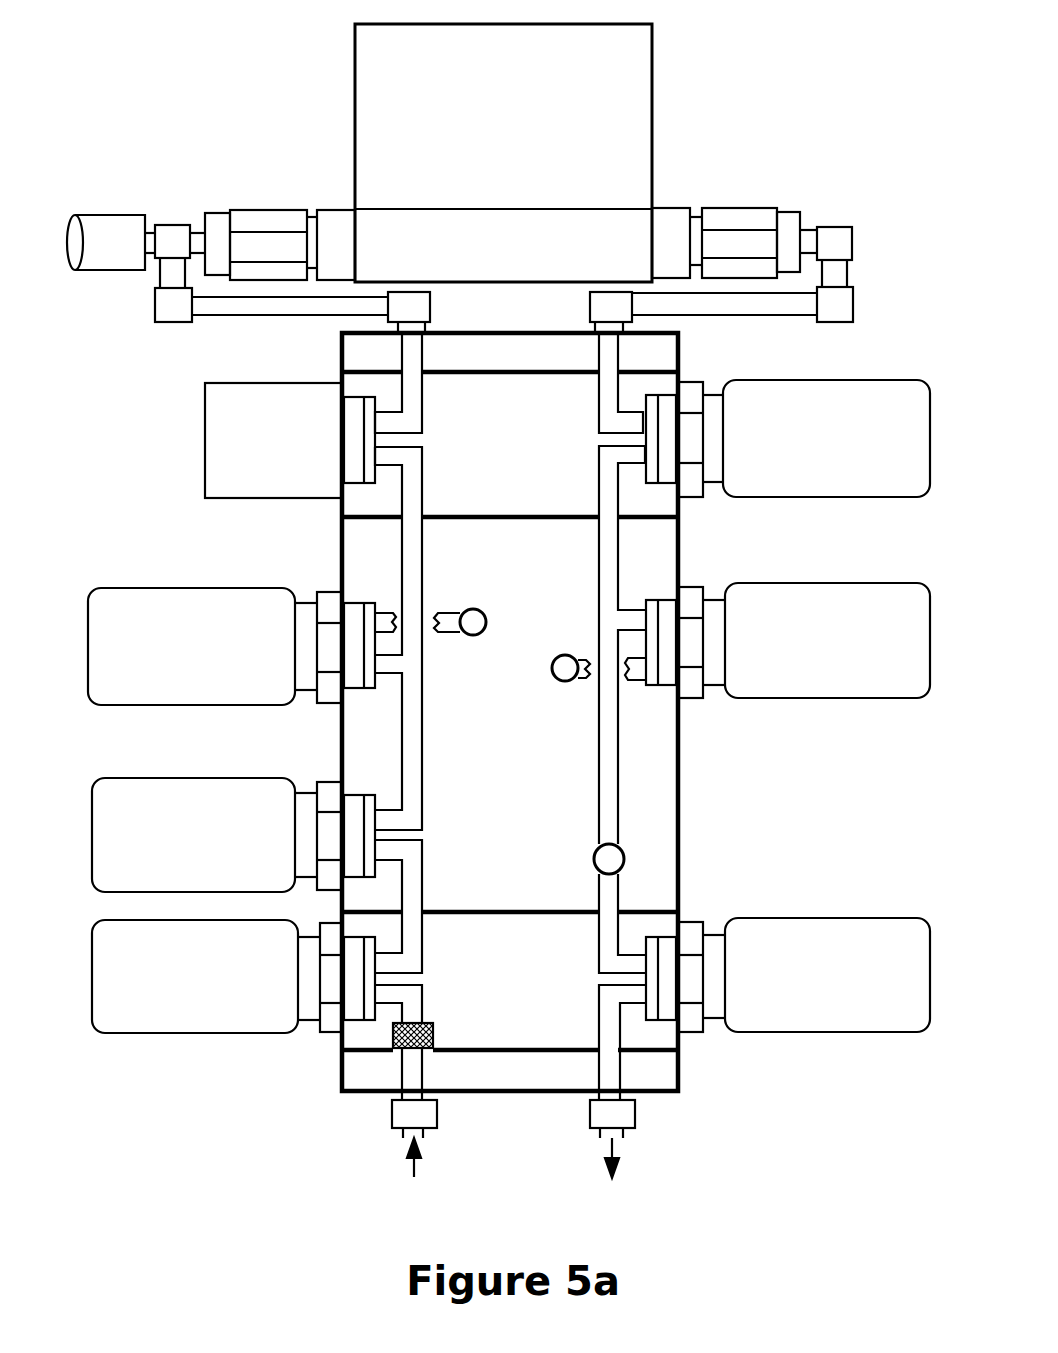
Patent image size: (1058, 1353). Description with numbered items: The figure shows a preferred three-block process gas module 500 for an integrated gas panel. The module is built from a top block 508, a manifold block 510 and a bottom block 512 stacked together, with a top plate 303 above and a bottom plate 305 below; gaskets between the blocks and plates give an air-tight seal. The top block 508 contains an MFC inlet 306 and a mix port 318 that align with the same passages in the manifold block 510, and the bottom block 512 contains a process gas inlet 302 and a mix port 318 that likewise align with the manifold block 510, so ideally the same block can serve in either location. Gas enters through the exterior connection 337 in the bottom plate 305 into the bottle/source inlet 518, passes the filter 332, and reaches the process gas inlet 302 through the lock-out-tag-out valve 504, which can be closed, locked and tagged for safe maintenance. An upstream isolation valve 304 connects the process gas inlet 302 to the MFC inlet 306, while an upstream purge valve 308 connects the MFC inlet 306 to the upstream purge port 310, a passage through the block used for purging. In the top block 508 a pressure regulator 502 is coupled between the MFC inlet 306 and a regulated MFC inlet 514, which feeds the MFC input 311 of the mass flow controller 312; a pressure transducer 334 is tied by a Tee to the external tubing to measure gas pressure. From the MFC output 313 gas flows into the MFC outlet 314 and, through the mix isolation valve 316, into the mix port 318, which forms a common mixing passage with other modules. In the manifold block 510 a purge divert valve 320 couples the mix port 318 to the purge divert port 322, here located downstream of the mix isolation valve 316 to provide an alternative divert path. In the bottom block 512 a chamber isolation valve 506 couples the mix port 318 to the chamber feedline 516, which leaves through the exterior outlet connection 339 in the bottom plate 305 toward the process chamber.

The process gas module 500 is at (209, 47).
The mass flow controller 312 is at (503, 153).
The MFC input 311 is at (324, 243).
The MFC output 313 is at (688, 240).
The pressure transducer 334 is at (115, 232).
The upper plate 303 is at (360, 348).
The lower plate 305 is at (355, 1065).
The top block 508 is at (355, 500).
The manifold block 510 is at (660, 810).
The bottom block 512 is at (353, 1032).
The regulated MFC inlet 514 is at (412, 405).
The MFC inlet 306 is at (413, 473).
The process gas inlet 302 is at (418, 865).
The bottle/source inlet 518 is at (410, 997).
The filter 332 is at (435, 1032).
The exterior connection 337 is at (400, 1113).
The MFC outlet 314 is at (610, 412).
The mix port 318 is at (605, 484).
The chamber feedline 516 is at (610, 1012).
The exterior outlet connection 339 is at (627, 1115).
The upstream purge port 310 is at (474, 620).
The purge divert port 322 is at (563, 670).
The pressure regulator 502 is at (273, 440).
The upstream purge valve 308 is at (215, 646).
The upstream isolation valve 304 is at (217, 835).
The lock-out-tag-out valve 504 is at (217, 976).
The mix isolation valve 316 is at (804, 438).
The purge divert valve 320 is at (804, 640).
The chamber isolation valve 506 is at (804, 975).